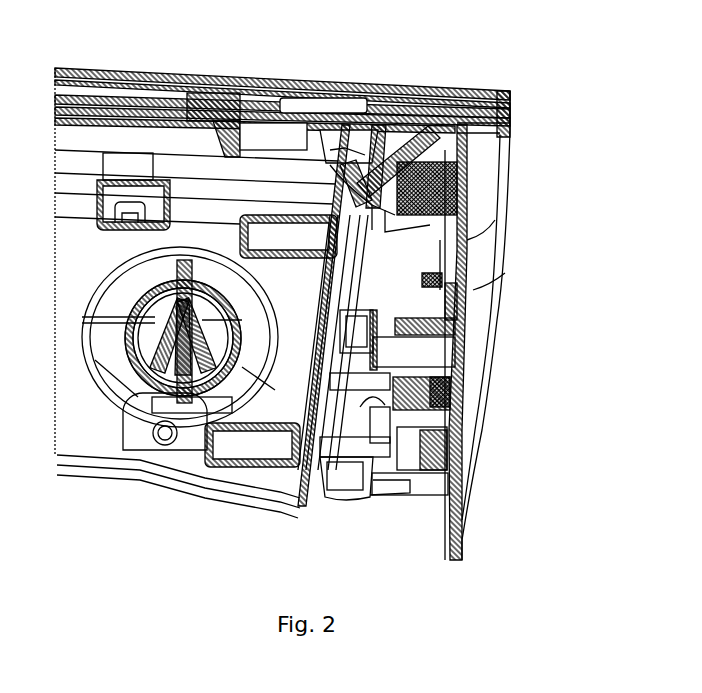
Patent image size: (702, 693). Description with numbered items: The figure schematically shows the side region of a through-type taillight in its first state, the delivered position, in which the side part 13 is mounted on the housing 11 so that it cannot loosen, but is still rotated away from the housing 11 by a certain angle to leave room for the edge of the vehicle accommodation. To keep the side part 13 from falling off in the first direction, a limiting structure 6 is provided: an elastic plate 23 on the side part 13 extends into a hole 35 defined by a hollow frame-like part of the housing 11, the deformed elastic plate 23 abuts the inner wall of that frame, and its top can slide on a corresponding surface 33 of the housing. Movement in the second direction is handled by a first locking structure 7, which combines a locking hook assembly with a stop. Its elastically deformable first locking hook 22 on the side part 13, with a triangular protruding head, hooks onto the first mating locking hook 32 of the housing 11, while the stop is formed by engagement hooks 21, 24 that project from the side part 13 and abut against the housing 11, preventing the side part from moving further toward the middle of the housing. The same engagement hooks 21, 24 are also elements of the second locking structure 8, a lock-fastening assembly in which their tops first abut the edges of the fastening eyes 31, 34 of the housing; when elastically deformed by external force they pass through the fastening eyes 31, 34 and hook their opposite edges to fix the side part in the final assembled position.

The housing 11 is at (143, 90).
The fastening eye 31 is at (362, 207).
The first mating locking hook 32 is at (380, 295).
The surface 33 is at (340, 428).
The hole 35 is at (380, 394).
The fastening eye 34 is at (374, 490).
The first locking structure 7 is at (440, 325).
The first locking hook 22 is at (437, 360).
The elastic plate 23 is at (440, 420).
The limiting structure 6 is at (437, 443).
The engagement hook 24 is at (440, 485).
The second locking structure 8 is at (460, 160).
The engagement hook 21 is at (455, 200).
The side part 13 is at (473, 300).